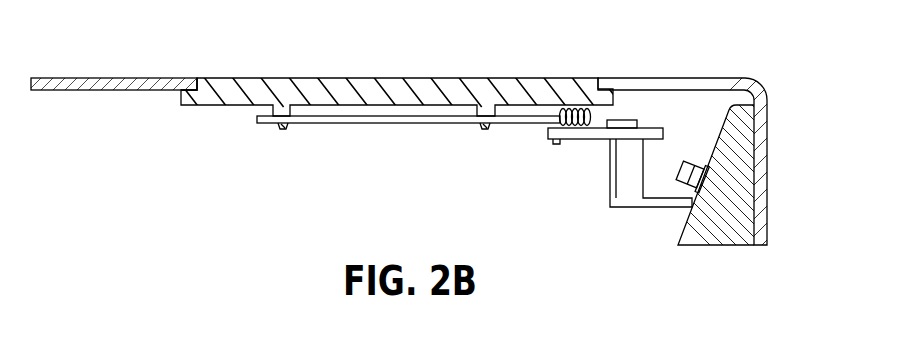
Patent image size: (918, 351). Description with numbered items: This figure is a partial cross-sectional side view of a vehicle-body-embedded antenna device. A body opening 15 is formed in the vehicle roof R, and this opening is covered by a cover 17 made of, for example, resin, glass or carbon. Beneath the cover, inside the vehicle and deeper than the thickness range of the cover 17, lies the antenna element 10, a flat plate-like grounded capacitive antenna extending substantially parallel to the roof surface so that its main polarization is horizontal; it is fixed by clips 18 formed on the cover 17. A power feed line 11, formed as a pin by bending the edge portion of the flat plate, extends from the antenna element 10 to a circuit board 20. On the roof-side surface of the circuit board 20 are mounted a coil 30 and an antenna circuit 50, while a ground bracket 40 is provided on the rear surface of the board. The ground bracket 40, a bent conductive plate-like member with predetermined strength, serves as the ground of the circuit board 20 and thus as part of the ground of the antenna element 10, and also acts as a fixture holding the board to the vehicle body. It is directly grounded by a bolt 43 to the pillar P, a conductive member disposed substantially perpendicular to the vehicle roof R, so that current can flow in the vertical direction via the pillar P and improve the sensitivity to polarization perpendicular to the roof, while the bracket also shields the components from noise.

The vehicle roof R is at (116, 80).
The body opening 15 is at (200, 78).
The cover 17 is at (516, 78).
The antenna element 10 is at (385, 123).
The clips 18 is at (283, 129).
The coil 30 is at (578, 110).
The circuit board 20 is at (660, 128).
The antenna circuit 50 is at (628, 120).
The power feed line 11 is at (556, 144).
The ground bracket 40 is at (628, 187).
The bolt 43 is at (688, 162).
The pillar P is at (748, 177).